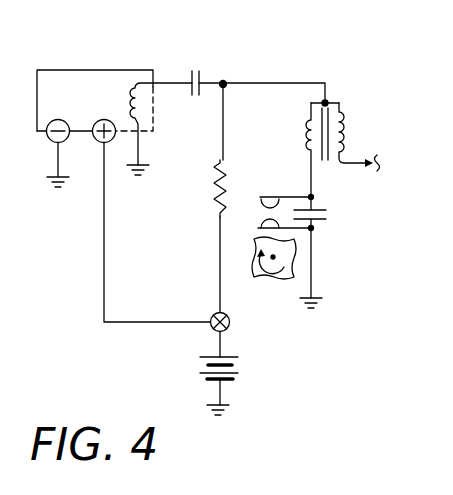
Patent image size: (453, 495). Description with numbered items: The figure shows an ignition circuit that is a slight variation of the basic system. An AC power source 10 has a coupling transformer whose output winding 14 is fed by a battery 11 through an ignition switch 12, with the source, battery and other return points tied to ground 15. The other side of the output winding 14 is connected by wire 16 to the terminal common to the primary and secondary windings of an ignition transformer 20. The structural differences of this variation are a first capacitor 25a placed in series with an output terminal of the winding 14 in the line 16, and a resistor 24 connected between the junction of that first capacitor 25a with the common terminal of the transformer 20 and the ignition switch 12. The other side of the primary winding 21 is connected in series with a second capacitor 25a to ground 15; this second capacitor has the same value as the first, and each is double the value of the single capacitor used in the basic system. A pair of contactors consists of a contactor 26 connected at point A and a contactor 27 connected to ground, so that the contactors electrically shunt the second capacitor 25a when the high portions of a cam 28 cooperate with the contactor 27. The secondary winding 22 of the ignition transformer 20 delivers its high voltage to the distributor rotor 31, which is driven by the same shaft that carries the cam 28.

The AC power source 10 is at (79, 105).
The battery 11 is at (234, 356).
The ignition switch 12 is at (229, 322).
The output winding 14 is at (142, 98).
The ground 15 is at (52, 178).
The wire 16 is at (168, 83).
The ignition transformer 20 is at (335, 80).
The primary winding 21 is at (307, 127).
The secondary winding 22 is at (343, 122).
The resistor 24 is at (213, 205).
The capacitor 25a is at (203, 73).
The contactor 26 is at (272, 197).
The contactor 27 is at (259, 228).
The cam 28 is at (273, 277).
The rotor 31 is at (393, 175).
The point A is at (317, 197).